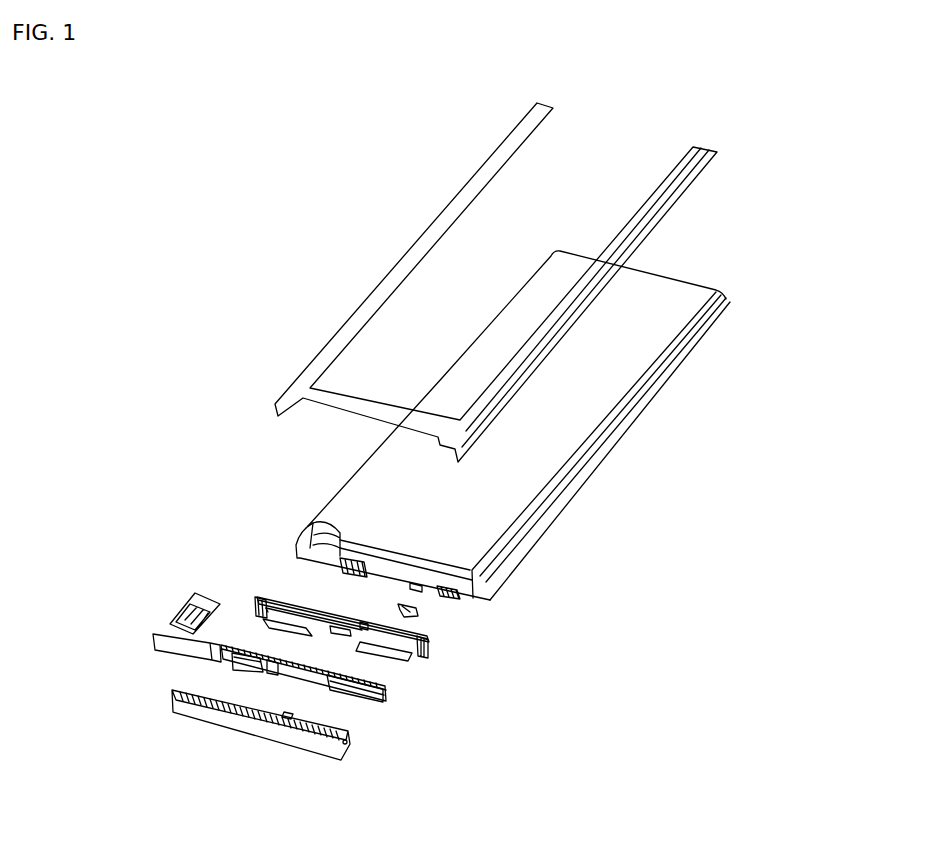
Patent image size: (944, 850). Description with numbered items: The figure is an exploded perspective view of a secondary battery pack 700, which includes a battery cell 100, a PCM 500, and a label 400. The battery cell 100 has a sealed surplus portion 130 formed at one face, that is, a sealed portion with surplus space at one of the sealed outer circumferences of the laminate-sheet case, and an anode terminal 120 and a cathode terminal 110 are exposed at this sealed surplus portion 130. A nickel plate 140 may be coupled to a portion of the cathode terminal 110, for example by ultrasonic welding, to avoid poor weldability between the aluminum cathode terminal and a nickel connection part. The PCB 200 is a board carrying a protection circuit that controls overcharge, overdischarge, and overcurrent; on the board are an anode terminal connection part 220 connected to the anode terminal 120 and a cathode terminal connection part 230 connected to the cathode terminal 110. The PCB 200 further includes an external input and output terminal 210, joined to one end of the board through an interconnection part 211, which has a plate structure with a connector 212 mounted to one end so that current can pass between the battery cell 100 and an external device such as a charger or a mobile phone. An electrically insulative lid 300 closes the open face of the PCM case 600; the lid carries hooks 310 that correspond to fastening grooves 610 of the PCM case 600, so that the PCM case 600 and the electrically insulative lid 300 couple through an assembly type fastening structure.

The secondary battery pack 700 is at (281, 249).
The label 400 is at (690, 160).
The battery cell 100 is at (513, 428).
The cathode terminal 110 is at (437, 599).
The anode terminal 120 is at (335, 531).
The sealed surplus portion 130 is at (387, 572).
The nickel plate 140 is at (413, 617).
The PCB 200 is at (230, 666).
The external input and output terminal 210 is at (120, 621).
The interconnection part 211 is at (150, 634).
The connector 212 is at (190, 604).
The anode terminal connection part 220 is at (241, 665).
The cathode terminal connection part 230 is at (343, 690).
The electrically insulative lid 300 is at (357, 630).
The hooks 310 is at (370, 612).
The PCM 500 is at (480, 648).
The PCM case 600 is at (274, 748).
The fastening grooves 610 is at (290, 715).